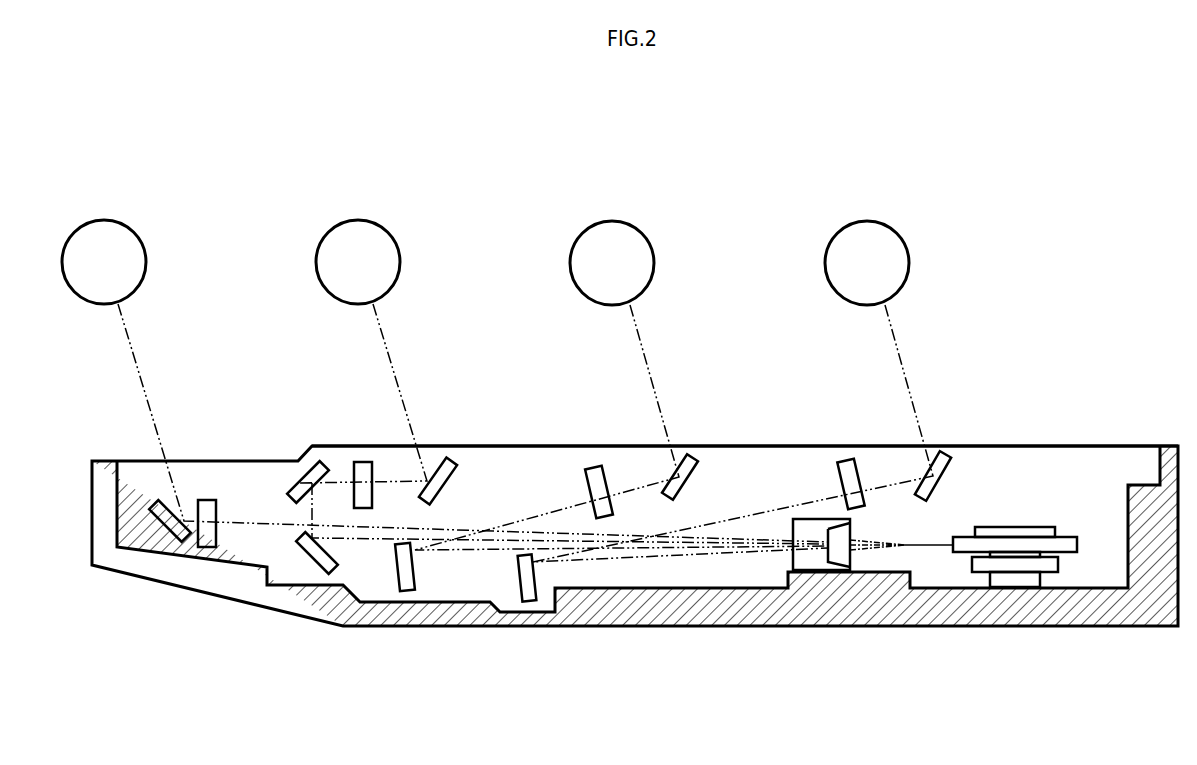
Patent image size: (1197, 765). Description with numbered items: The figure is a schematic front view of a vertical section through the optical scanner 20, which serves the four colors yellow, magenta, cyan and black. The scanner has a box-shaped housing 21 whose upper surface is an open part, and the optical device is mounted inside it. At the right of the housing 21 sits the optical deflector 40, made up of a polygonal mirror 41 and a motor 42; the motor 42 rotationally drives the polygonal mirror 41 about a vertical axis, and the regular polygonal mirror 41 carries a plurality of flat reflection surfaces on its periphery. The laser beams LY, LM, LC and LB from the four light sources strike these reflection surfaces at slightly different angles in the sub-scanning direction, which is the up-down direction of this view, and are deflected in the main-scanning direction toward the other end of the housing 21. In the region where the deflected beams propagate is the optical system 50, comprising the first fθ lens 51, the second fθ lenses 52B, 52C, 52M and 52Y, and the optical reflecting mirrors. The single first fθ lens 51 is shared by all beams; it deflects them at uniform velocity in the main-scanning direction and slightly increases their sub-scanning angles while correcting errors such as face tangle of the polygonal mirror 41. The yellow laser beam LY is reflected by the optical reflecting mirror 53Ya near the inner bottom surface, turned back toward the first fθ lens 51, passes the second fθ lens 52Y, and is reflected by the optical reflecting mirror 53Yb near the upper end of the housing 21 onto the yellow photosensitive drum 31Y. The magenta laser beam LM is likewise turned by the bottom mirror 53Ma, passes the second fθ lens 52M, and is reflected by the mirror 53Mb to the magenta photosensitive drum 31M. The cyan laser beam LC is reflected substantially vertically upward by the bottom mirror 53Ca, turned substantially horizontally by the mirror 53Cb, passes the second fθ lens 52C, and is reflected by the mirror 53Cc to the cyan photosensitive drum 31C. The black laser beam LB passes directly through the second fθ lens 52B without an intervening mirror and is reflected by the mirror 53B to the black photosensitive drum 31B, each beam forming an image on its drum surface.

The optical scanner 20 is at (1042, 345).
The housing 21 is at (732, 627).
The black photosensitive drum 31B is at (104, 220).
The cyan photosensitive drum 31C is at (358, 220).
The magenta photosensitive drum 31M is at (612, 221).
The yellow photosensitive drum 31Y is at (867, 221).
The optical deflector 40 is at (1016, 541).
The polygonal mirror 41 is at (1072, 536).
The motor 42 is at (1015, 578).
The optical system 50 is at (765, 468).
The first fθ lens 51 is at (800, 518).
The second fθ lens 52B is at (207, 499).
The second fθ lens 52C is at (363, 461).
The second fθ lens 52M is at (592, 466).
The second fθ lens 52Y is at (847, 460).
The optical reflecting mirror 53B is at (166, 537).
The optical reflecting mirror 53Ca is at (308, 568).
The optical reflecting mirror 53Cb is at (296, 467).
The optical reflecting mirror 53Cc is at (446, 464).
The optical reflecting mirror 53Ma is at (403, 592).
The optical reflecting mirror 53Mb is at (684, 456).
The optical reflecting mirror 53Ya is at (527, 602).
The optical reflecting mirror 53Yb is at (938, 452).
The black laser beam LB is at (246, 521).
The cyan laser beam LC is at (367, 540).
The magenta laser beam LM is at (463, 553).
The yellow laser beam LY is at (631, 560).